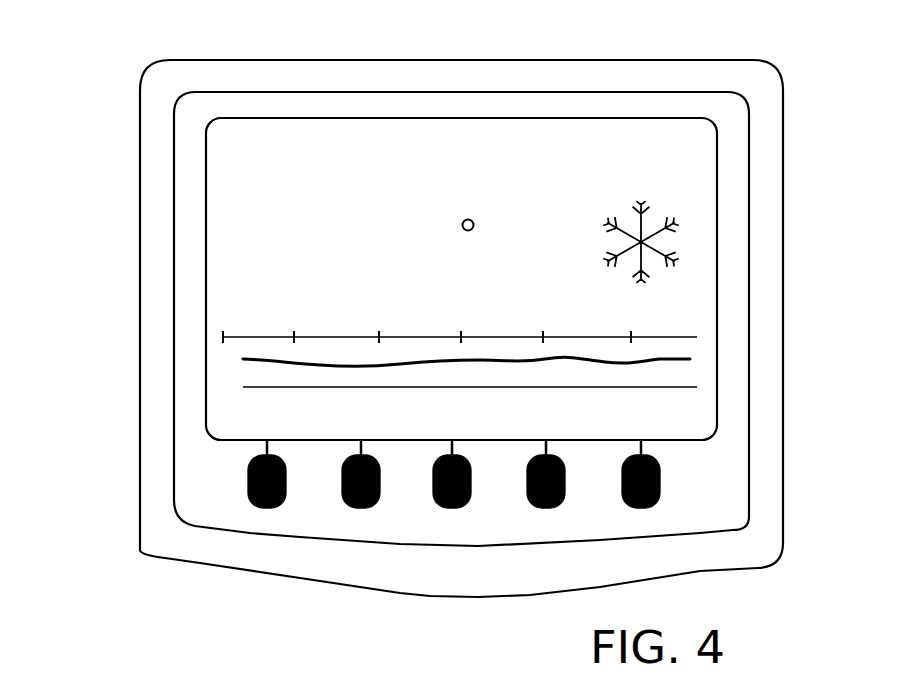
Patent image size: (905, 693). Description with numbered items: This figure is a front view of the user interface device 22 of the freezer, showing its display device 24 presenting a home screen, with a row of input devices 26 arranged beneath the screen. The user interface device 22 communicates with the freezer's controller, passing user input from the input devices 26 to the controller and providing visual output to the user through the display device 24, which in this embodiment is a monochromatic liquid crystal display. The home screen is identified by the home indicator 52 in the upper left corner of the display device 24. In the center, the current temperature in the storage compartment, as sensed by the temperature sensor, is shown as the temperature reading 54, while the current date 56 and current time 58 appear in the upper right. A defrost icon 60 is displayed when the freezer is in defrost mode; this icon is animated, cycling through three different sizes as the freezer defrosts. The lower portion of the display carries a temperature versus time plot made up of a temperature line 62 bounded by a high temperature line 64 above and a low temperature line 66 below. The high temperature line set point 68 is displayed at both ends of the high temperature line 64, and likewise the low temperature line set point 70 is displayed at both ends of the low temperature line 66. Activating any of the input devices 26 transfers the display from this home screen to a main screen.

The user interface device 22 is at (113, 133).
The display device 24 is at (225, 208).
The input devices 26 is at (267, 508).
The home indicator 52 is at (275, 129).
The temperature reading 54 is at (457, 205).
The current date 56 is at (700, 123).
The current time 58 is at (709, 170).
The defrost icon 60 is at (696, 243).
The temperature line 62 is at (676, 358).
The high temperature line 64 is at (217, 338).
The low temperature line 66 is at (241, 393).
The high temperature line set point 68 is at (214, 301).
The low temperature line set point 70 is at (209, 453).